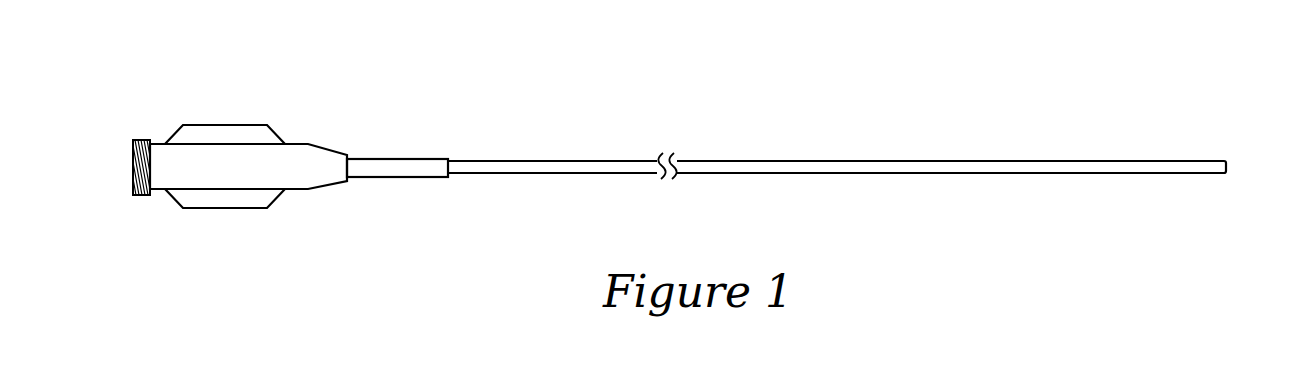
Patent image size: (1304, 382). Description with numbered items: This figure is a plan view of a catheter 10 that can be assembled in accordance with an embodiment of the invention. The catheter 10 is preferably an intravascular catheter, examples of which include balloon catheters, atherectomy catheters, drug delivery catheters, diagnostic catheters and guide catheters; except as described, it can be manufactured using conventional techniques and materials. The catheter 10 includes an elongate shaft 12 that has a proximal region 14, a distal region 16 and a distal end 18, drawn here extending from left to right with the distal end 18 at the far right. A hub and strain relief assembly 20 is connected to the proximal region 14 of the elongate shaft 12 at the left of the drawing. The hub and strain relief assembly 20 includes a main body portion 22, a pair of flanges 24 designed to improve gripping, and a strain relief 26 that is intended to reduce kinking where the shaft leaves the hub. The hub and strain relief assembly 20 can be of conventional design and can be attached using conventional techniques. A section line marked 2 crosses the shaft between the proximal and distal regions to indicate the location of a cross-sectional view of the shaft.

The catheter 10 is at (710, 88).
The elongate shaft 12 is at (618, 175).
The proximal region 14 is at (500, 202).
The distal region 16 is at (1043, 173).
The distal end 18 is at (1227, 162).
The hub and strain relief assembly 20 is at (280, 87).
The main body portion 22 is at (218, 172).
The flanges 24 is at (220, 130).
The strain relief 26 is at (397, 163).
The section line 2- 2 is at (905, 203).